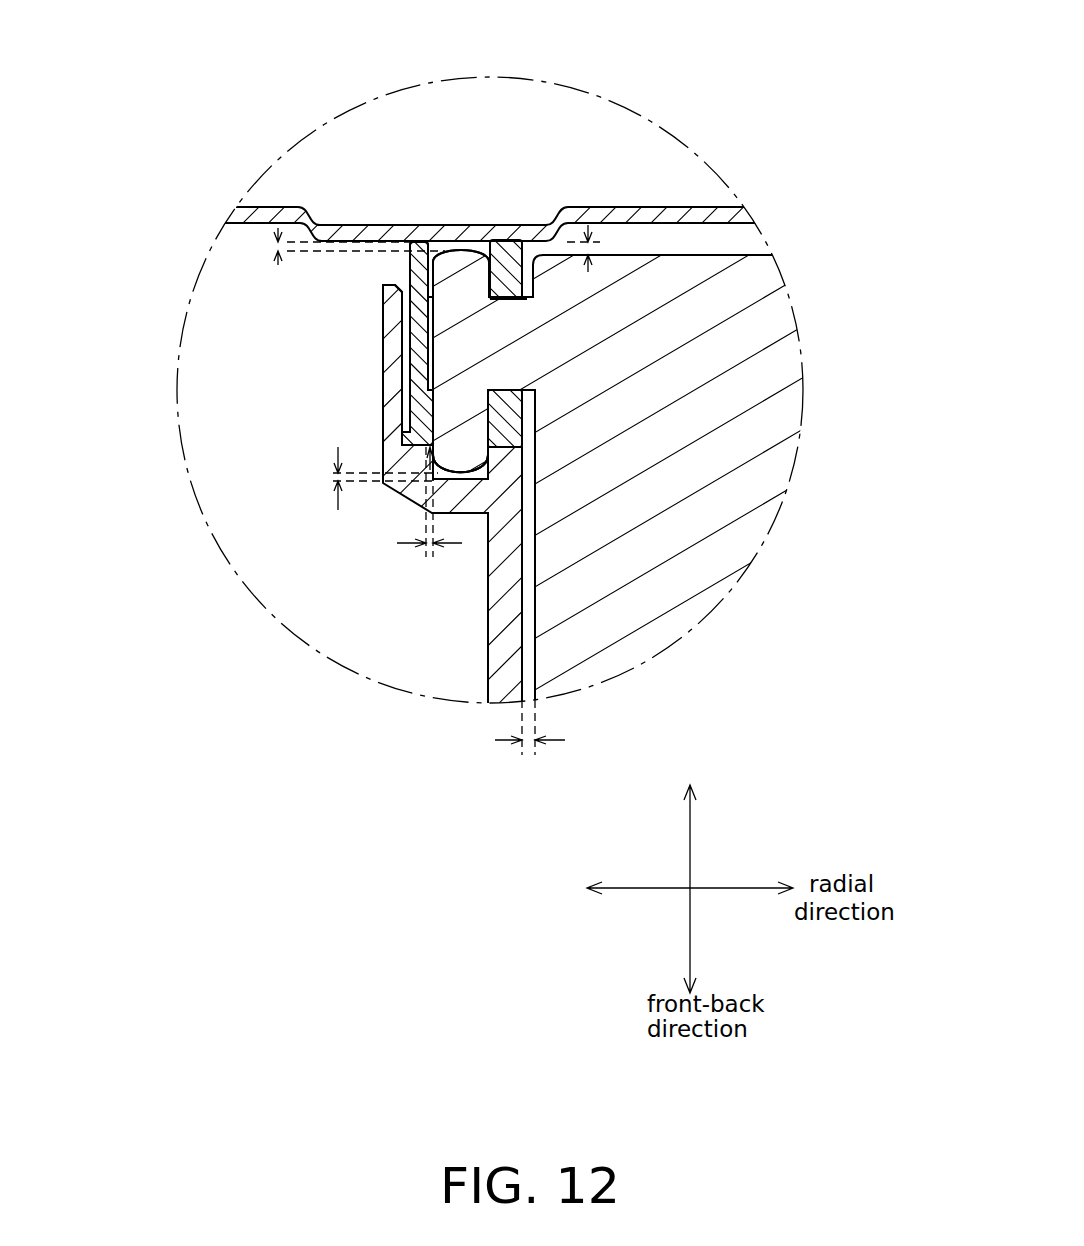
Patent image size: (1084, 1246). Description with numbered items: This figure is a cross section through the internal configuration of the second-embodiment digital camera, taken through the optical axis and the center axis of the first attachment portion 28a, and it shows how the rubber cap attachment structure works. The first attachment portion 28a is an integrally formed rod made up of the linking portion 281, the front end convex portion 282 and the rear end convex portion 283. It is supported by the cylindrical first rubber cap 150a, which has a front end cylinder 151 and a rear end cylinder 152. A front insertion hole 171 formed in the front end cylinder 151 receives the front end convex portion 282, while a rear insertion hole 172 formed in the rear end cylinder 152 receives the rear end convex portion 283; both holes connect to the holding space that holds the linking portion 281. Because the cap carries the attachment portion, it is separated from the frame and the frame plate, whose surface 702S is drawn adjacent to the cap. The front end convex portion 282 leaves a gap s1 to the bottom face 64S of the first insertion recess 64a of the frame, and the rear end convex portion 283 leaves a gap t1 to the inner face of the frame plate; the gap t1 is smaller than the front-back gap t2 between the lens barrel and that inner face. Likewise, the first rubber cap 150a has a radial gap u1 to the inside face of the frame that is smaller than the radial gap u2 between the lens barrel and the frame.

The lower surface of cover plate 702S is at (703, 222).
The linking portion 281 is at (535, 425).
The front end convex portion 282 is at (460, 443).
The rear end convex portion 283 is at (455, 275).
The first attachment portion 28a is at (477, 477).
The first insertion recess 64a is at (392, 342).
The bottom face 64S is at (535, 497).
The first rubber cap 150a is at (418, 433).
The front end cylinder 151 is at (418, 412).
The rear end cylinder 152 is at (423, 263).
The front insertion hole 171 is at (338, 446).
The rear insertion hole 172 is at (437, 250).
The gap t1 is at (265, 251).
The gap t2 is at (609, 253).
The gap s1 is at (322, 483).
The gap u1 is at (430, 557).
The gap u2 is at (529, 745).